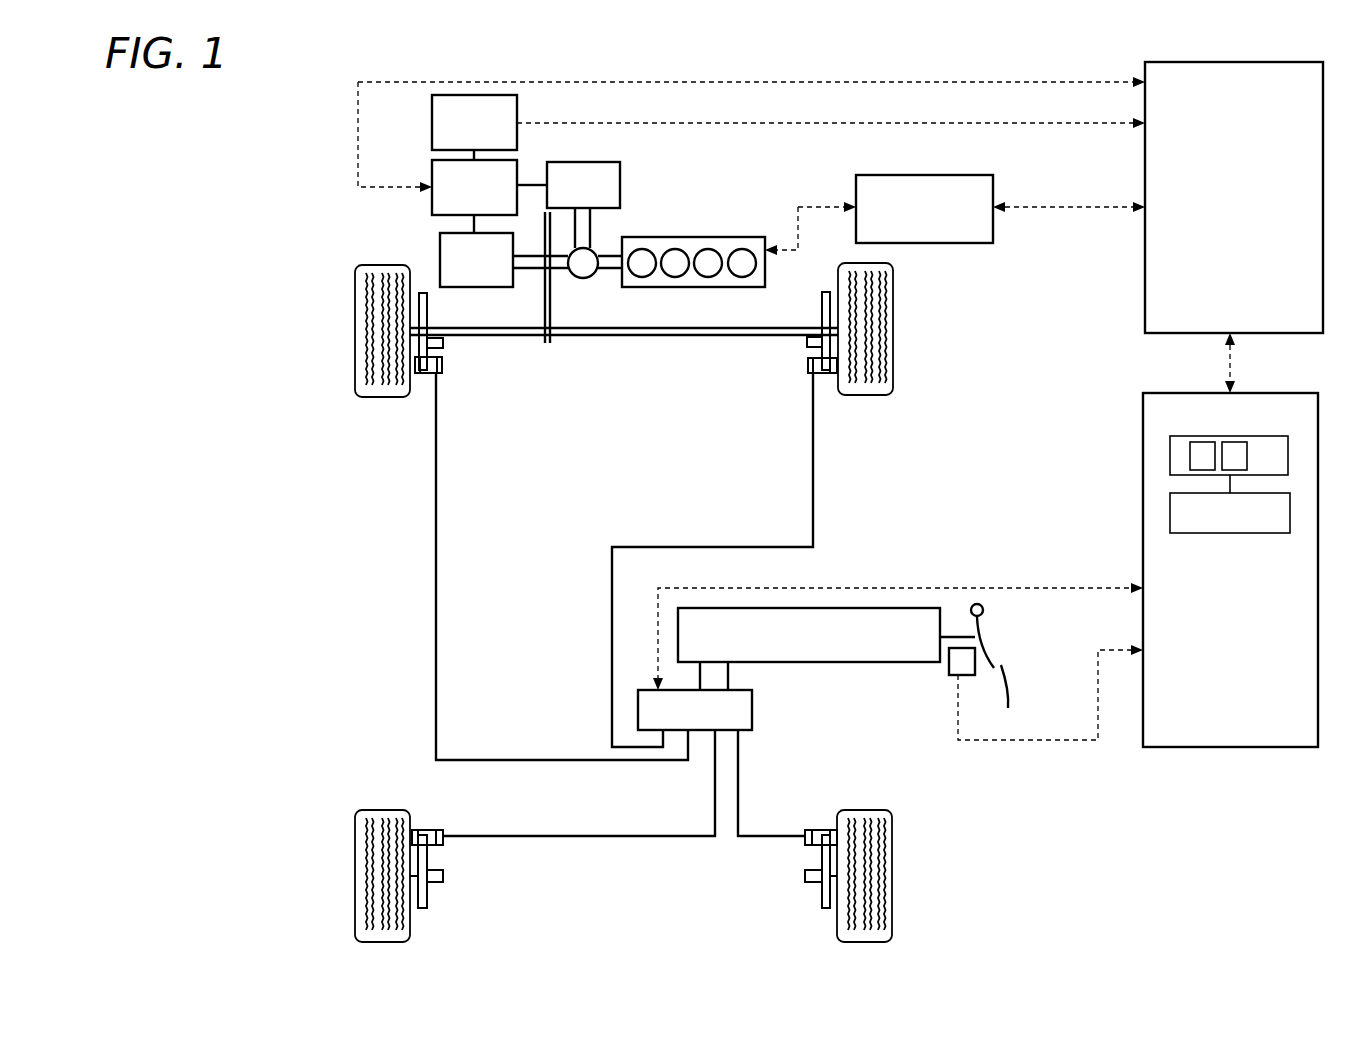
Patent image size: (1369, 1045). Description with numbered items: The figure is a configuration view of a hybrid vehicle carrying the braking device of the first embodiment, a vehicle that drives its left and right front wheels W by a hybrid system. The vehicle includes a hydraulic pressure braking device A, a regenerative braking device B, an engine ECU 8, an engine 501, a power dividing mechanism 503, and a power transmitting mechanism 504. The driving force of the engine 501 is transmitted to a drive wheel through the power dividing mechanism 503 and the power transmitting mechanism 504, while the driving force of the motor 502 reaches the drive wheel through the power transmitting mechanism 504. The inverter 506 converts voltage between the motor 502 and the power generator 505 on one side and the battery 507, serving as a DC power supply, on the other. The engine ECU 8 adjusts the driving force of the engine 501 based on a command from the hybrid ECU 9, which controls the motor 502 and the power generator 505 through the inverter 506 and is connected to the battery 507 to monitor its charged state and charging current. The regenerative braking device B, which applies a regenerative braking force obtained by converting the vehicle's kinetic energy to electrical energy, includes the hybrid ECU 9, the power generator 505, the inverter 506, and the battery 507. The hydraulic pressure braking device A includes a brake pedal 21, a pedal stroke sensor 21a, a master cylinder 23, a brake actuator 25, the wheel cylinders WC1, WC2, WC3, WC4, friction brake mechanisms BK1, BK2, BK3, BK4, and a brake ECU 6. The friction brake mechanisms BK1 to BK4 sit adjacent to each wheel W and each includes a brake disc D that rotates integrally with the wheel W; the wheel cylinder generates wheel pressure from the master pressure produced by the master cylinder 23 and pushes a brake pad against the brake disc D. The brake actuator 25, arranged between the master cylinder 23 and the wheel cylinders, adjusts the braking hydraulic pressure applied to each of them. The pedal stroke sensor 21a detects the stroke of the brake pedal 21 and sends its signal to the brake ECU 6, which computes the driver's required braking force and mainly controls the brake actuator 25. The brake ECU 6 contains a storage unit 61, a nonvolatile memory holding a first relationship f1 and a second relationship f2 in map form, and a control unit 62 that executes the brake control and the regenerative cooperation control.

The hydraulic pressure braking device A is at (398, 203).
The regenerative braking device B is at (958, 786).
The wheel W is at (355, 331).
The brake disc D is at (428, 313).
The wheel cylinder WC1 is at (445, 368).
The wheel cylinder WC2 is at (808, 367).
The wheel cylinder WC3 is at (445, 845).
The wheel cylinder WC4 is at (806, 846).
The friction brake mechanism BK1 is at (420, 377).
The friction brake mechanism BK2 is at (822, 377).
The friction brake mechanism BK3 is at (421, 828).
The friction brake mechanism BK4 is at (825, 828).
The engine 501 is at (722, 237).
The motor 502 is at (505, 287).
The power dividing mechanism 503 is at (594, 272).
The power transmitting mechanism 504 is at (562, 298).
The power generator 505 is at (620, 178).
The inverter 506 is at (432, 180).
The battery 507 is at (432, 123).
The engine ECU 8 is at (918, 175).
The hybrid ECU 9 is at (1323, 203).
The brake ECU 6 is at (1318, 557).
The storage unit 61 is at (1170, 458).
The control unit 62 is at (1170, 512).
The first relationship f1 is at (1197, 448).
The second relationship f2 is at (1228, 448).
The brake pedal 21 is at (982, 655).
The pedal stroke sensor 21a is at (965, 678).
The master cylinder 23 is at (850, 662).
The brake actuator 25 is at (752, 715).